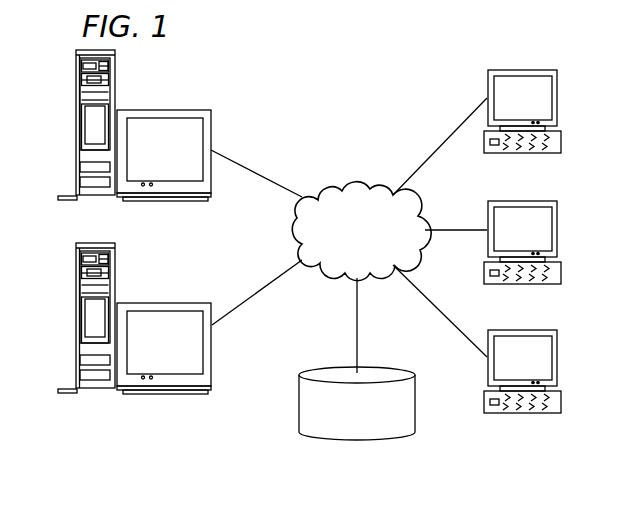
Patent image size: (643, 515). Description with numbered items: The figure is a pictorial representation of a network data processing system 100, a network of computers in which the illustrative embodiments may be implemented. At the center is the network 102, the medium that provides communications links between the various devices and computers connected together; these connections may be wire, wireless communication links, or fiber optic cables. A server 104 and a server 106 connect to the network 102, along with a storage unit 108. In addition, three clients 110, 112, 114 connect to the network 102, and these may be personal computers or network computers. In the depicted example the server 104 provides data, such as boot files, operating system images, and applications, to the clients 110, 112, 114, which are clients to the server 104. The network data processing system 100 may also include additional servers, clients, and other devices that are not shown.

The network data processing system 100 is at (406, 80).
The network 102 is at (332, 183).
The server 104 is at (75, 125).
The server 106 is at (75, 319).
The storage unit 108 is at (342, 444).
The client 110 is at (557, 100).
The client 112 is at (557, 230).
The client 114 is at (557, 358).